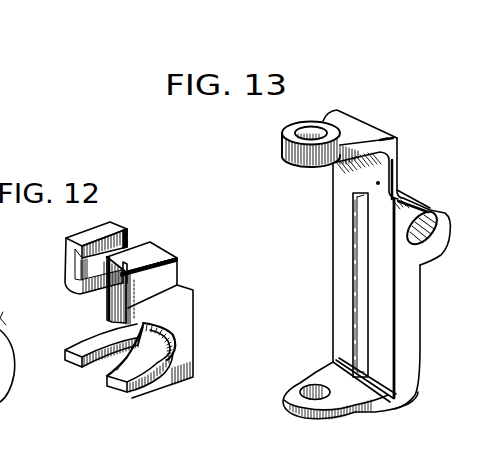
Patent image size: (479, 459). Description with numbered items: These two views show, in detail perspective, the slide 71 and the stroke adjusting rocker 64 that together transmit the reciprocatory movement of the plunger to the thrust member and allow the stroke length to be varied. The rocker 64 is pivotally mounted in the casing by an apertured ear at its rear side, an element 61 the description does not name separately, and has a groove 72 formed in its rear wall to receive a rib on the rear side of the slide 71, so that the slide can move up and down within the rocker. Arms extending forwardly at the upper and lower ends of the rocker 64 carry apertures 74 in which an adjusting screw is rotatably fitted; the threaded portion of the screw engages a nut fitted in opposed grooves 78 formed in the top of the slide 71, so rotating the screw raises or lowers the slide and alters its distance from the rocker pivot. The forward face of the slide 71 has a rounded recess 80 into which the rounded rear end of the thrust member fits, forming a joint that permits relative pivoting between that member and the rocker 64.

In FIG. 12, the opposed grooves 78 is at (72, 266).
In FIG. 12, the slide 71 is at (183, 315).
In FIG. 12, the rounded recess 80 is at (108, 331).
In FIG. 13, the apertures 74 is at (286, 132).
In FIG. 13, the stroke adjusting rocker 64 is at (398, 141).
In FIG. 13, the groove 72 is at (355, 260).
In FIG. 13, the side lug 61 is at (436, 206).